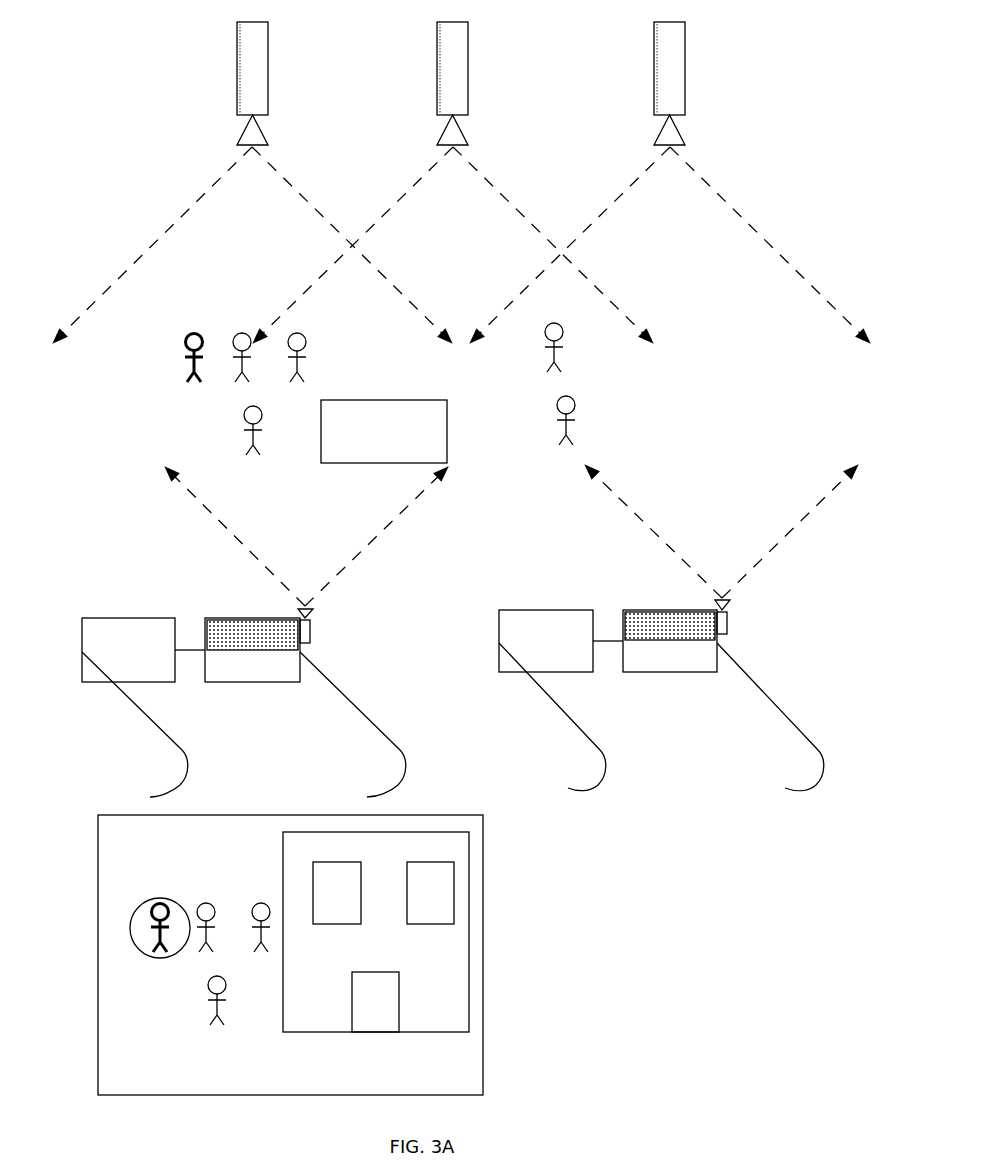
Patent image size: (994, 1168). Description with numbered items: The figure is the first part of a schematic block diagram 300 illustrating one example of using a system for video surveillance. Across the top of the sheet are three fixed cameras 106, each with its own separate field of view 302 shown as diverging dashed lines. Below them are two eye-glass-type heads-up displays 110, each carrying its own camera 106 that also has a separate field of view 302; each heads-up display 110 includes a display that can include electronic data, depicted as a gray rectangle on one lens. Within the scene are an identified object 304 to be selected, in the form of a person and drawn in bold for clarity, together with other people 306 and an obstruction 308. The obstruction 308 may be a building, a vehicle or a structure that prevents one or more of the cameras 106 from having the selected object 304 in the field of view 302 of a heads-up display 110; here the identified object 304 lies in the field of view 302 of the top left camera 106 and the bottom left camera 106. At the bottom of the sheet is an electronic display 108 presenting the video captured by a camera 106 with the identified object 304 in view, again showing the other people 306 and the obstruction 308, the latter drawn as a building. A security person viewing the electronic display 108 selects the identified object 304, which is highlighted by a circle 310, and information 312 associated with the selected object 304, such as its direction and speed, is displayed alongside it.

The schematic block diagram 300 is at (160, 60).
The field of view 302 is at (397, 200).
The camera 106 is at (800, 645).
The heads-up display 110 is at (614, 598).
The identified object 304 is at (190, 363).
The other people 306 is at (552, 360).
The obstruction 308 is at (363, 1084).
The electronic display 108 is at (522, 947).
The circle 310 is at (130, 925).
The information 312 is at (127, 856).